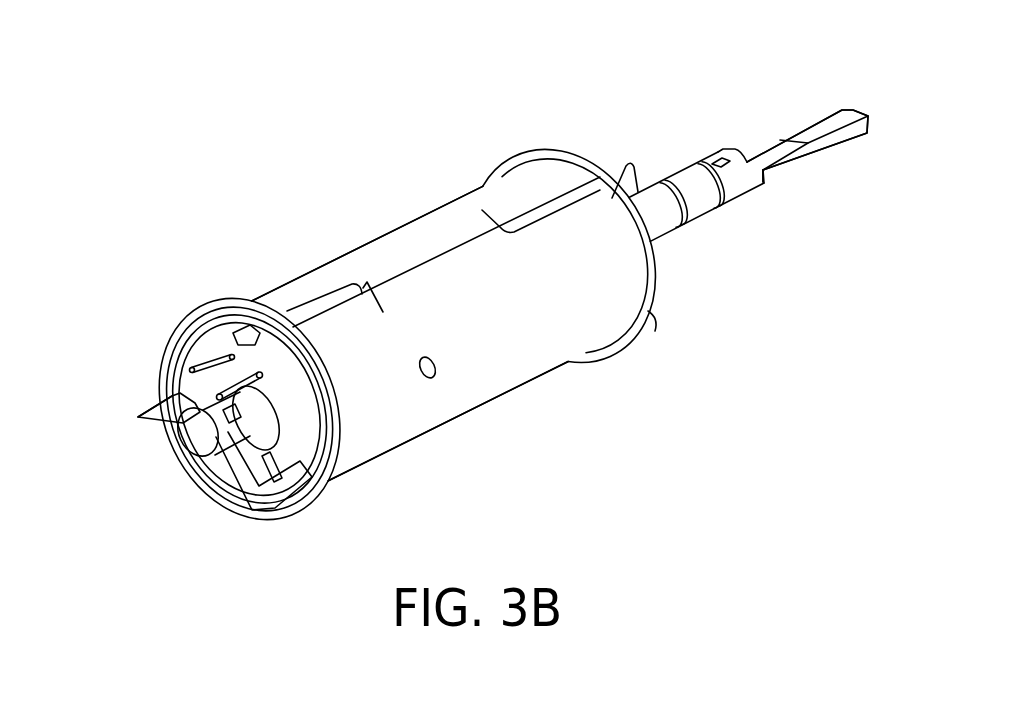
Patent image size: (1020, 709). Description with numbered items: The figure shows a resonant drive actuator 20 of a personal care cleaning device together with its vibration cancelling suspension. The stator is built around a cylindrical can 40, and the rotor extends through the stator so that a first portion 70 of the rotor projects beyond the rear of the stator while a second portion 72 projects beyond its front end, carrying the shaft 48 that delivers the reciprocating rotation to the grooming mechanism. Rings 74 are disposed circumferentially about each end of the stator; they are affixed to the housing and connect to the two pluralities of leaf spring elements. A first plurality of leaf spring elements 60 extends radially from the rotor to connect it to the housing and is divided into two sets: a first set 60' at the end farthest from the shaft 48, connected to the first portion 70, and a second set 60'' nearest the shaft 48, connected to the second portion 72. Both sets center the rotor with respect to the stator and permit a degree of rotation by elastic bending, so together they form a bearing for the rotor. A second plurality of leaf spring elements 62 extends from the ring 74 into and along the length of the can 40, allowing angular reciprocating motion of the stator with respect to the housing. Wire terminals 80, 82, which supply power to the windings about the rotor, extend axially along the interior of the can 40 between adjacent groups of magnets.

The resonant drive actuator 20 is at (250, 131).
The can 40 is at (488, 383).
The shaft 48 is at (804, 103).
The first plurality of leaf spring elements 60 is at (371, 326).
The first set of leaf spring elements 60' is at (191, 396).
The second set of leaf spring elements 60'' is at (640, 249).
The second plurality of leaf spring elements 62 is at (328, 302).
The first portion of rotor 70 is at (240, 495).
The second portion of rotor 72 is at (690, 222).
The rings 74 is at (232, 300).
The wire terminal 80 is at (231, 333).
The wire terminal 82 is at (267, 362).